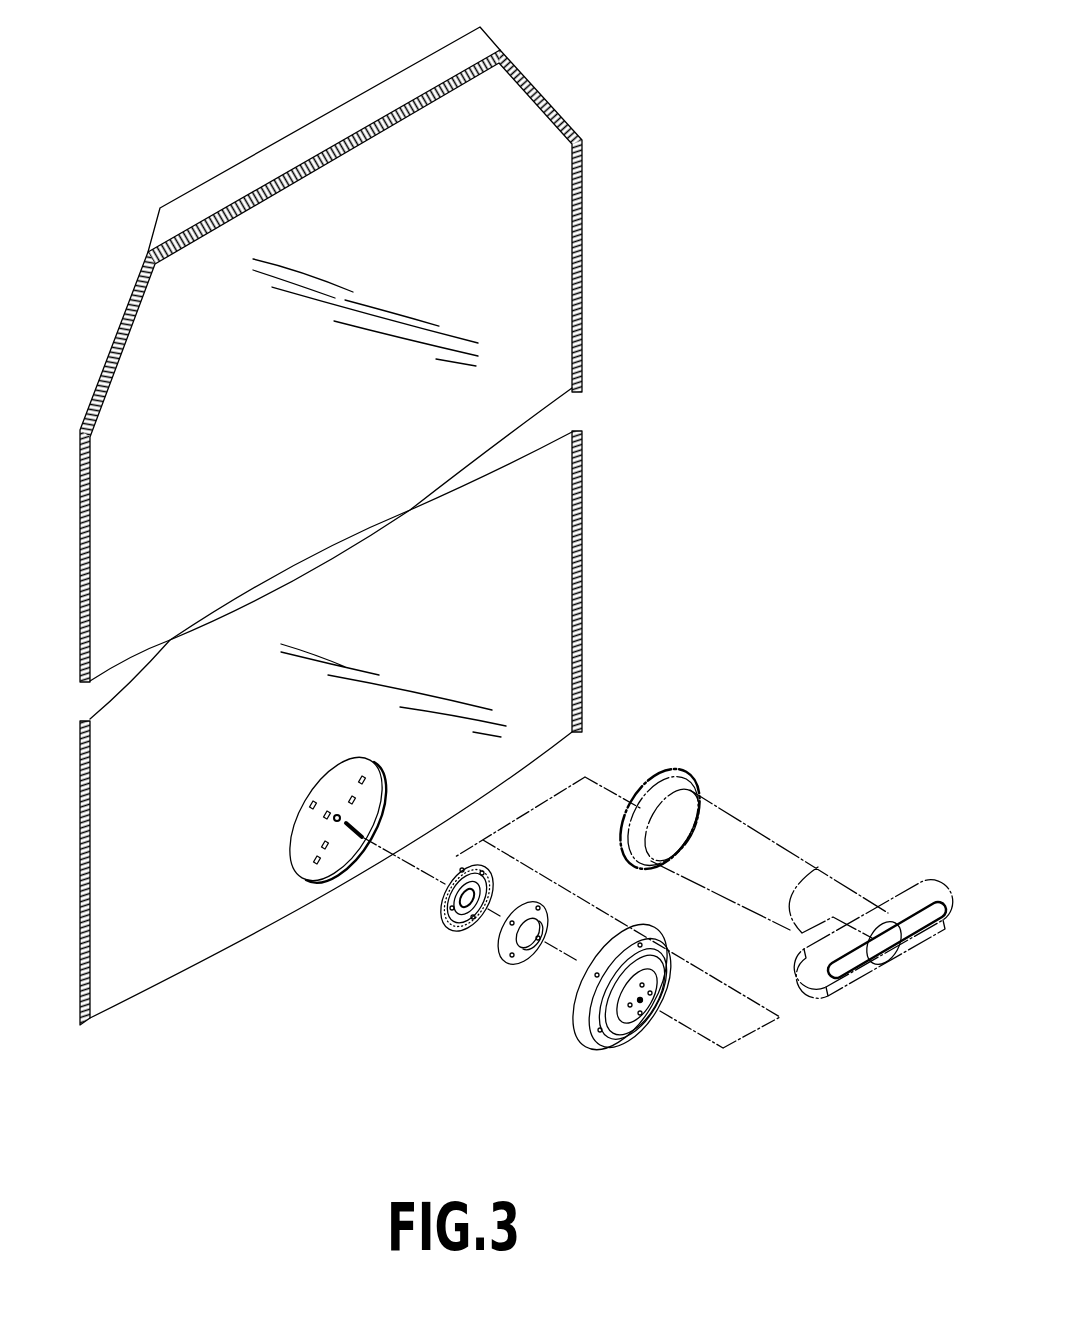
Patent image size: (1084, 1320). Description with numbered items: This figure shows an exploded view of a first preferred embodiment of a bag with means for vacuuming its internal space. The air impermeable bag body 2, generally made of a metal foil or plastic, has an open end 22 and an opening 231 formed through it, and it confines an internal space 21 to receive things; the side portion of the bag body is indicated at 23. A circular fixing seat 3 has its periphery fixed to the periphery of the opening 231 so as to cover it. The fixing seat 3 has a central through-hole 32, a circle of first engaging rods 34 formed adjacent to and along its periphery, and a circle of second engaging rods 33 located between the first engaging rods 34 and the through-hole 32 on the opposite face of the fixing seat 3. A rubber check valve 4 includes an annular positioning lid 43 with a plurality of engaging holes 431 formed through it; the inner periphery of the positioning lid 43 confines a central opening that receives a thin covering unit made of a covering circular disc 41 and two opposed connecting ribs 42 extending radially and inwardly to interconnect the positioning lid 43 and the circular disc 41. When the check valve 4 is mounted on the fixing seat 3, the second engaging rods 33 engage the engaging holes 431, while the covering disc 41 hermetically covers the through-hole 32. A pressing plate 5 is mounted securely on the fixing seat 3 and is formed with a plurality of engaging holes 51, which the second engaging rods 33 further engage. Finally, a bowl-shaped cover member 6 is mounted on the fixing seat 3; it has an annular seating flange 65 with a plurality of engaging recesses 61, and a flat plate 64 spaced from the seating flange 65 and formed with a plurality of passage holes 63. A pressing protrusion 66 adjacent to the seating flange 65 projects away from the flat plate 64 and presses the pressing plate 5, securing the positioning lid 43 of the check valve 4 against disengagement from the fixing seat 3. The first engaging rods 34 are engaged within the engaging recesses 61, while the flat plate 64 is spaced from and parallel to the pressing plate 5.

The bag body 2 is at (368, 526).
The internal space 21 is at (404, 536).
The open end 22 is at (314, 145).
The side frame 23 is at (541, 644).
The opening 231 is at (317, 882).
The fixing seat 3 is at (354, 836).
The central through-hole 32 is at (340, 818).
The second engaging rods 33 is at (352, 800).
The first engaging rods 34 is at (363, 777).
The check valve 4 is at (460, 907).
The covering circular disc 41 is at (468, 932).
The connecting ribs 42 is at (443, 920).
The annular positioning lid 43 is at (465, 867).
The engaging holes 431 is at (445, 900).
The pressing plate 5 is at (539, 953).
The engaging holes 51 is at (517, 963).
The cover member 6 is at (621, 1017).
The engaging recesses 61 is at (640, 946).
The passage holes 63 is at (655, 995).
The flat plate 64 is at (623, 1017).
The annular seating flange 65 is at (583, 1033).
The pressing protrusion 66 is at (597, 1005).